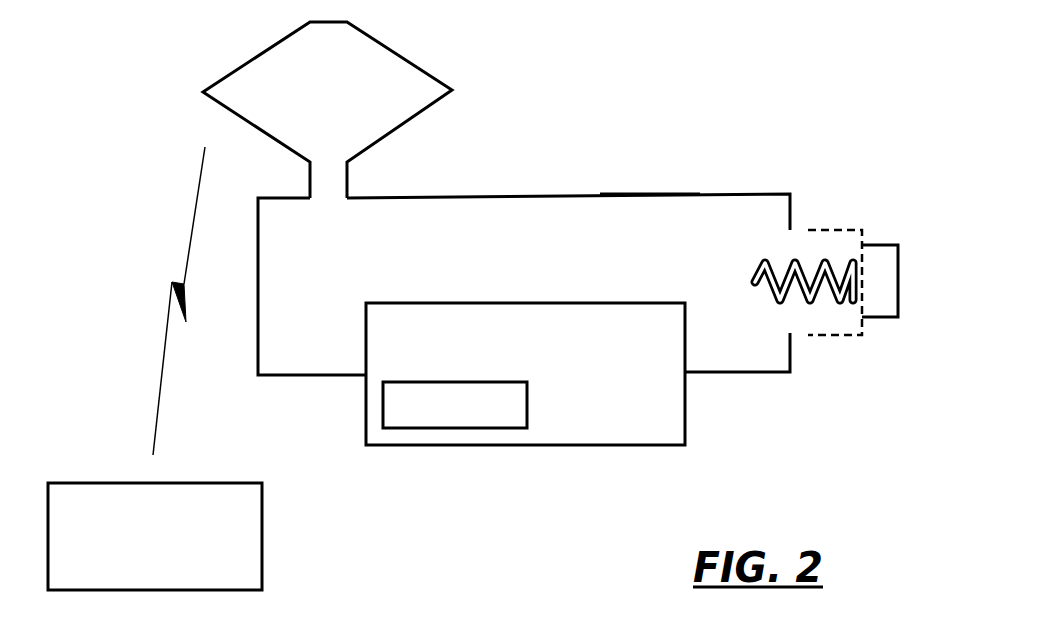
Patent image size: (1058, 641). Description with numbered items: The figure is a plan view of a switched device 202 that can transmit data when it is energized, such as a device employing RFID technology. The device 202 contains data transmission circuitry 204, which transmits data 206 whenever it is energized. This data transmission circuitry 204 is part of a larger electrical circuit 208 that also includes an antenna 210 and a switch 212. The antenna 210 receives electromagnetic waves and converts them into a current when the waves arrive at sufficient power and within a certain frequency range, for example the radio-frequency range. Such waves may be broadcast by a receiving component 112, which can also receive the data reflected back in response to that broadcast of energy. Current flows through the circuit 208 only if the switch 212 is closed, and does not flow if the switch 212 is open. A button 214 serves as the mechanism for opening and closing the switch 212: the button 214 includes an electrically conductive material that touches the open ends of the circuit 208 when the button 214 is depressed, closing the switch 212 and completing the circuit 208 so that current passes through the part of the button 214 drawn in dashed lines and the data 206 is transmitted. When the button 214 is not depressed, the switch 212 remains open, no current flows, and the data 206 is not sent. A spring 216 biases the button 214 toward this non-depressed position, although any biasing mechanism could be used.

The receiving component 112 is at (155, 536).
The device 202 is at (683, 178).
The data transmission circuitry 204 is at (525, 374).
The data 206 is at (455, 405).
The electrical circuit 208 is at (463, 193).
The antenna 210 is at (398, 73).
The switch 212 is at (795, 325).
The button 214 is at (870, 220).
The spring 216 is at (755, 257).